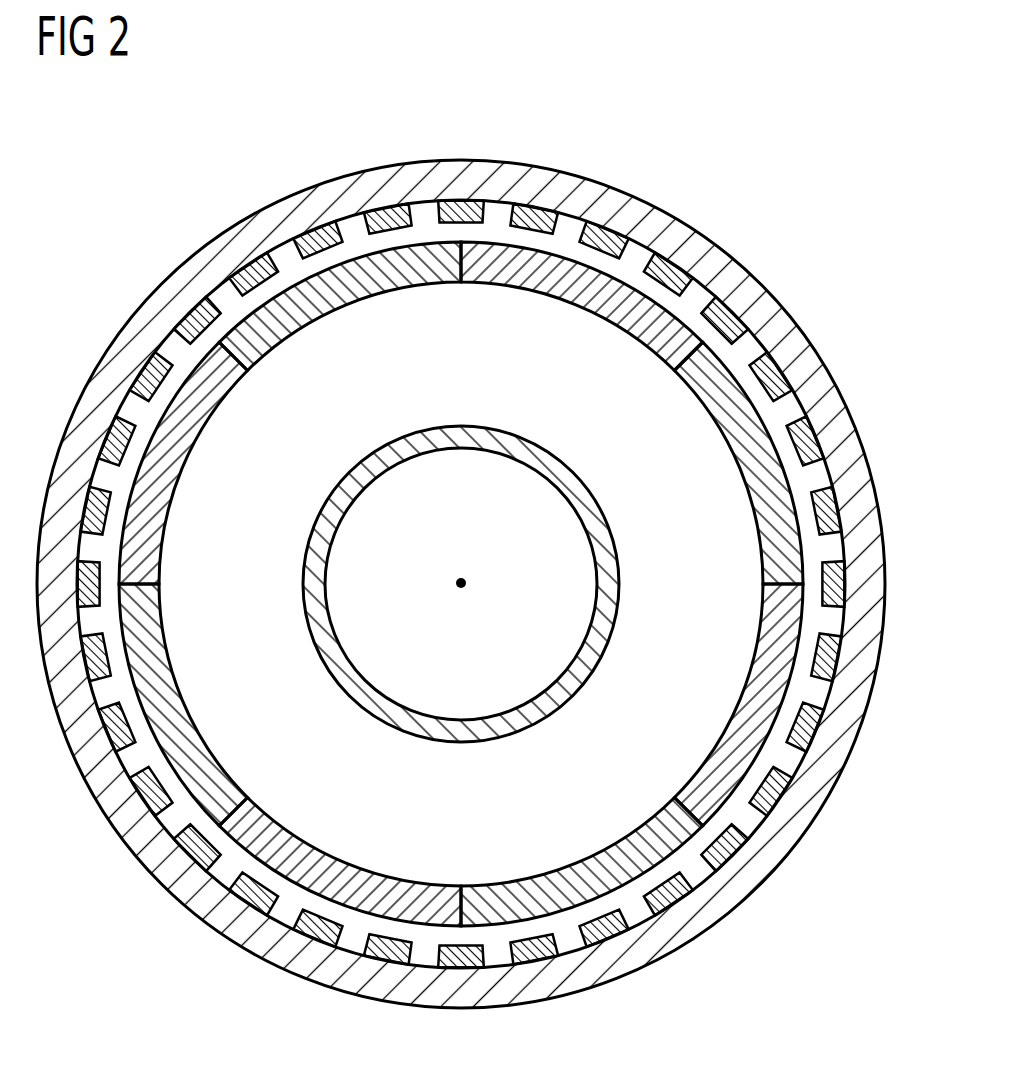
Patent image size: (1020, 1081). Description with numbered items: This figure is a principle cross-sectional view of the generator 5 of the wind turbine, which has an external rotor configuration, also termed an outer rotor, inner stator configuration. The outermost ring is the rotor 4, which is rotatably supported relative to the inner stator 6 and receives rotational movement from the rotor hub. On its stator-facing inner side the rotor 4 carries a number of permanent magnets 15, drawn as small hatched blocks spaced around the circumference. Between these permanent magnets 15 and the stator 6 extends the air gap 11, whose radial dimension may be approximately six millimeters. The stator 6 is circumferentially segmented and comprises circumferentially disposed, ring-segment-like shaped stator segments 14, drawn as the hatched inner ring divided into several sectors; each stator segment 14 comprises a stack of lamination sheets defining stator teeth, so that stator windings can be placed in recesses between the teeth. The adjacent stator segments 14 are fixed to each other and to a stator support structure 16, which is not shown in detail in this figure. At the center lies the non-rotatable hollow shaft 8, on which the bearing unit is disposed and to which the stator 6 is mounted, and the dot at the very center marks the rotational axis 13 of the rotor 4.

The rotor 4 is at (208, 263).
The generator 5 is at (243, 198).
The stator 6 is at (562, 248).
The hollow shaft 8 is at (567, 480).
The air gap 11 is at (750, 783).
The rotational axis 13 is at (464, 583).
The stator segment 14 is at (342, 287).
The permanent magnet 15 is at (317, 228).
The stator support structure 16 is at (685, 447).